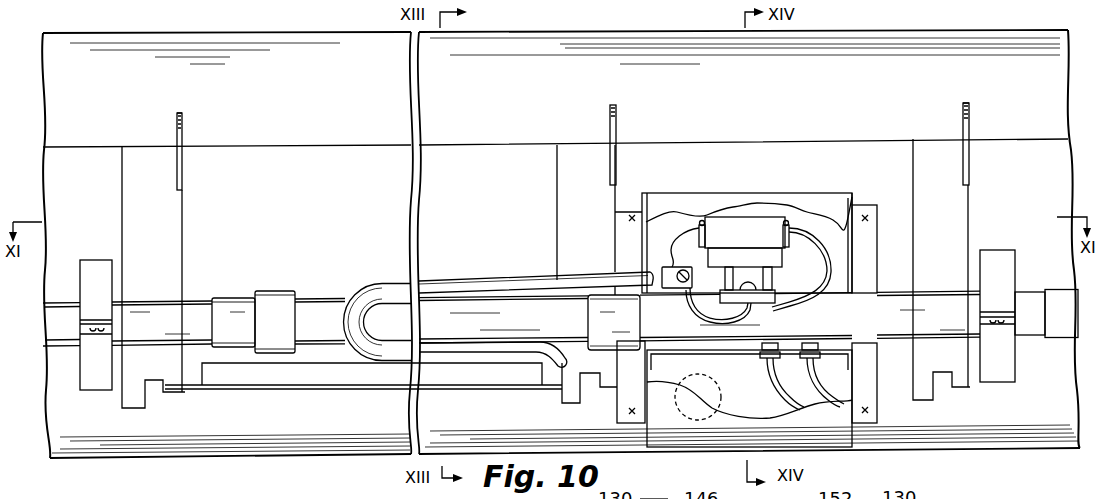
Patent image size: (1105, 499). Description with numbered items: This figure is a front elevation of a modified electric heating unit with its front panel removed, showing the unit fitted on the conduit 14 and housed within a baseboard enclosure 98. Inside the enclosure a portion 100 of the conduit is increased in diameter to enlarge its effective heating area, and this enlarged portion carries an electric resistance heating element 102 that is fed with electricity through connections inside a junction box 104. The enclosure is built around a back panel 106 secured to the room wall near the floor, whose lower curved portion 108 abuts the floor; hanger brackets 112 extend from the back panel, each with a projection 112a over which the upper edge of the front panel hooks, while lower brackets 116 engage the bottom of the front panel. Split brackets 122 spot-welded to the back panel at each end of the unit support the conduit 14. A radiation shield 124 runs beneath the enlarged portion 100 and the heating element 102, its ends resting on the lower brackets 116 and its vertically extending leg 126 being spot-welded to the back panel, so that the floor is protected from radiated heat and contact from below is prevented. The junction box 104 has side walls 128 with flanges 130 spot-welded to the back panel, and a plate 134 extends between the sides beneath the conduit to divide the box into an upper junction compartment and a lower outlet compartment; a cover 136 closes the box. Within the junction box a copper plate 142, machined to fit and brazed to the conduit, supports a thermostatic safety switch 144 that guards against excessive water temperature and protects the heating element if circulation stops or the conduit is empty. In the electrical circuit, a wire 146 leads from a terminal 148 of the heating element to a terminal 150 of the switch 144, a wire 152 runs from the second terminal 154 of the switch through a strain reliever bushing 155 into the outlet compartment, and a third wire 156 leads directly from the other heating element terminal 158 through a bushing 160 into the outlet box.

The conduit 14 is at (68, 302).
The baseboard enclosure 98 is at (232, 32).
The enlarged portion of the conduit 100 is at (332, 295).
The electric resistance heating element 102 is at (477, 280).
The junction box 104 is at (772, 192).
The back panel 106 is at (343, 207).
The lower curved portion 108 is at (308, 458).
The hanger bracket 112 is at (176, 134).
The projection 112a is at (181, 114).
The lower bracket 116 is at (164, 393).
The split bracket 122 is at (101, 259).
The radiation shield 124 is at (328, 390).
The vertically extending leg 126 is at (245, 375).
The side wall 128 is at (648, 254).
The flange 130 is at (628, 237).
The plate 134 is at (690, 350).
The cover 136 is at (665, 193).
The copper plate 142 is at (745, 312).
The thermostatic safety switch 144 is at (757, 248).
The wire 146 is at (668, 236).
The terminal 148 is at (654, 490).
The terminal 150 is at (704, 226).
The wire 152 is at (852, 200).
The second terminal 154 is at (786, 224).
The strain reliever bushing 155 is at (826, 344).
The third wire 156 is at (778, 303).
The terminal 158 is at (662, 292).
The bushing 160 is at (770, 358).